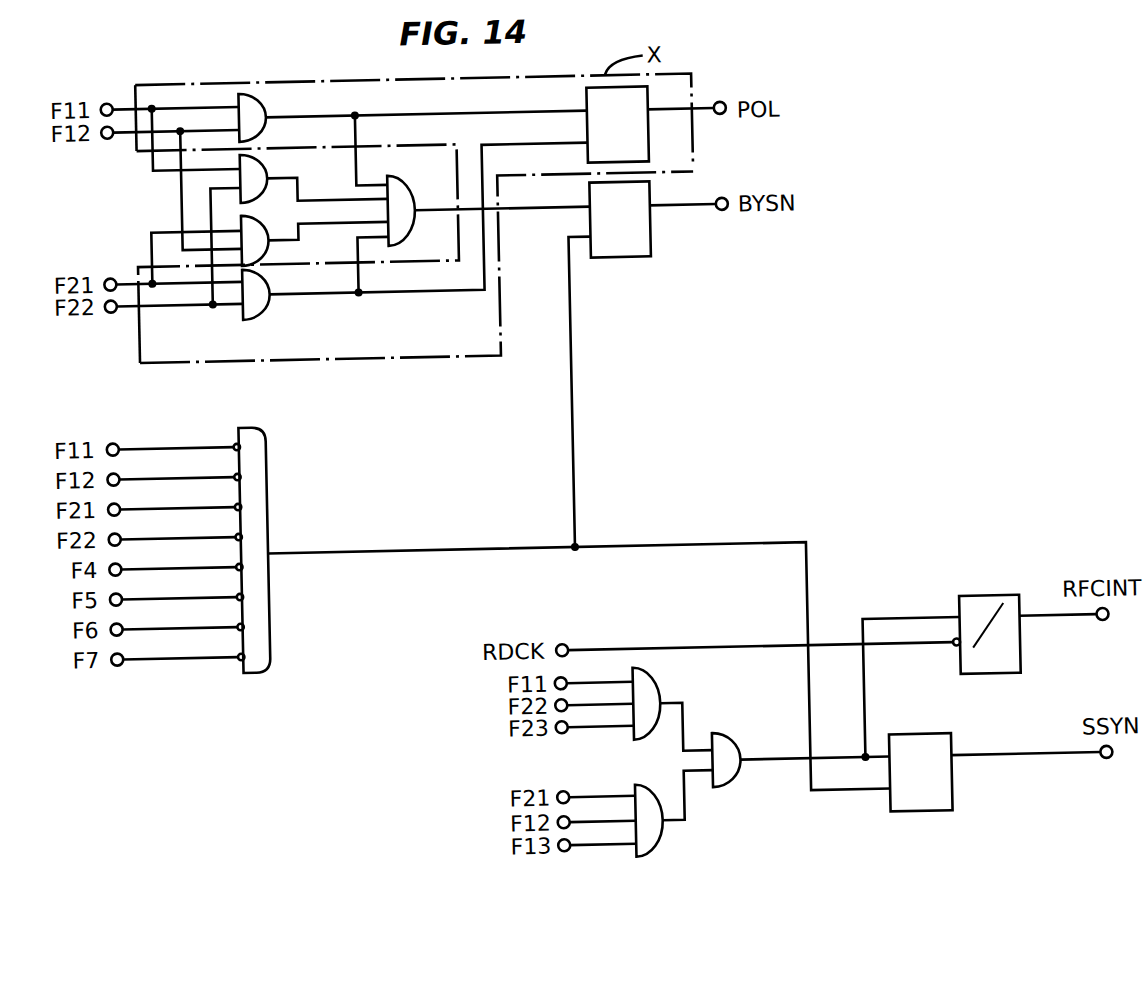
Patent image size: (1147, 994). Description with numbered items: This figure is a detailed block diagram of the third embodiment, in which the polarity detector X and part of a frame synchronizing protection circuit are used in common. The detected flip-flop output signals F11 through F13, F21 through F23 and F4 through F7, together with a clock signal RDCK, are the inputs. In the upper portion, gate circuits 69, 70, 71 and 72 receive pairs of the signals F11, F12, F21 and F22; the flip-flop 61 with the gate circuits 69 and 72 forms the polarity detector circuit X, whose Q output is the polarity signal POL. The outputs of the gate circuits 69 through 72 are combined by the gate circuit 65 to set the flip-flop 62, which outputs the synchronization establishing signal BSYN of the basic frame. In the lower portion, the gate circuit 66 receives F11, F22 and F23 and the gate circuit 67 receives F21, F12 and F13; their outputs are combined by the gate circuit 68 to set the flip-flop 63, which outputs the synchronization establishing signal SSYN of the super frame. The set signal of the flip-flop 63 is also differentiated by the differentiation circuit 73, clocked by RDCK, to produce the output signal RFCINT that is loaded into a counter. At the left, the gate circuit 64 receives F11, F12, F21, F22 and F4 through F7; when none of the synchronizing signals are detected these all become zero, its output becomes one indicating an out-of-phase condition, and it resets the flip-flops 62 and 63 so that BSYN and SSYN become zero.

The flip-flop 61 is at (596, 93).
The flip-flop 62 is at (657, 240).
The flip-flop 63 is at (899, 741).
The gate circuit 64 is at (254, 427).
The gate circuit 65 is at (405, 175).
The gate circuit 66 is at (642, 672).
The gate circuit 67 is at (646, 852).
The gate circuit 68 is at (712, 786).
The gate circuit 69 is at (290, 109).
The gate circuit 70 is at (279, 167).
The gate circuit 71 is at (283, 247).
The gate circuit 72 is at (275, 303).
The differentiation circuit 73 is at (997, 604).